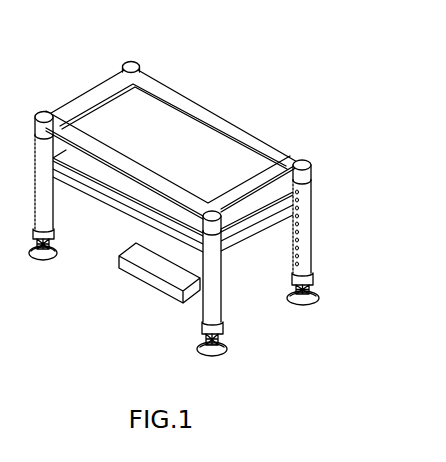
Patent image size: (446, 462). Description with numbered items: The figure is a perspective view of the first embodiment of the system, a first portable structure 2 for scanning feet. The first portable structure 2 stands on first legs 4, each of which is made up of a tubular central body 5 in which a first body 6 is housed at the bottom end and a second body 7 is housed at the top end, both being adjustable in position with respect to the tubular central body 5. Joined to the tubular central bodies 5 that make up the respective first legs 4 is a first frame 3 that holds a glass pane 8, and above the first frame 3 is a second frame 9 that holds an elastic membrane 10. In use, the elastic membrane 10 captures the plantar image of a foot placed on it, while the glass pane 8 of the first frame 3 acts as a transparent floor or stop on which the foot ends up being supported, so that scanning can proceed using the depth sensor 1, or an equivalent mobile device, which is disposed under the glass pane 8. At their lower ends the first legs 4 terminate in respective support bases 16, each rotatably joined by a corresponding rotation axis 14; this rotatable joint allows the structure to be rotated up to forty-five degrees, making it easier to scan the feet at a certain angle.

The depth sensor 1 is at (167, 286).
The first portable structure 2 is at (173, 121).
The first frame 3 is at (72, 188).
The first legs 4 is at (338, 228).
The tubular central body 5 is at (313, 203).
The first body 6 is at (312, 279).
The second body 7 is at (306, 174).
The glass pane 8 is at (103, 187).
The second frame 9 is at (158, 79).
The elastic membrane 10 is at (177, 112).
The rotation axis 14 is at (311, 289).
The support base 16 is at (309, 302).